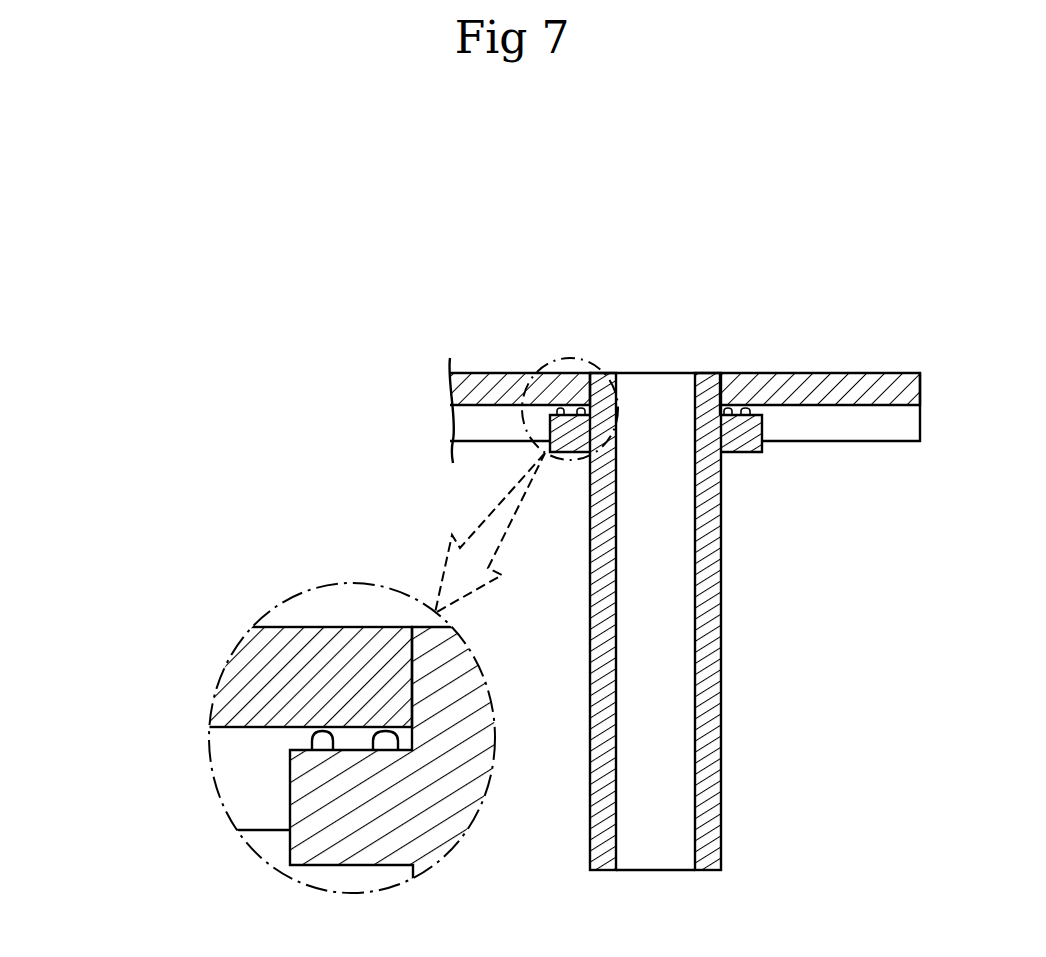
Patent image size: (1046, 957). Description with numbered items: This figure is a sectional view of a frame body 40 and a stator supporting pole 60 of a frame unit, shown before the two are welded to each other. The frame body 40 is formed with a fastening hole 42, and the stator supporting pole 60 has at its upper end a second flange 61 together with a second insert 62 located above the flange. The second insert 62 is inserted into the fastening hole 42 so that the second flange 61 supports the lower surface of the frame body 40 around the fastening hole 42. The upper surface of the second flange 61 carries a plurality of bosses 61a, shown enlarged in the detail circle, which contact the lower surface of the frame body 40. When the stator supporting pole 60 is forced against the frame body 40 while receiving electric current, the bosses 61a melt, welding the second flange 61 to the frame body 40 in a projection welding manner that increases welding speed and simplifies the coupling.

The frame body 40 is at (878, 374).
The fastening hole 42 is at (605, 373).
The stator supporting pole 60 is at (707, 697).
The second flange 61 is at (743, 453).
The boss 61a is at (313, 740).
The second insert 62 is at (722, 382).